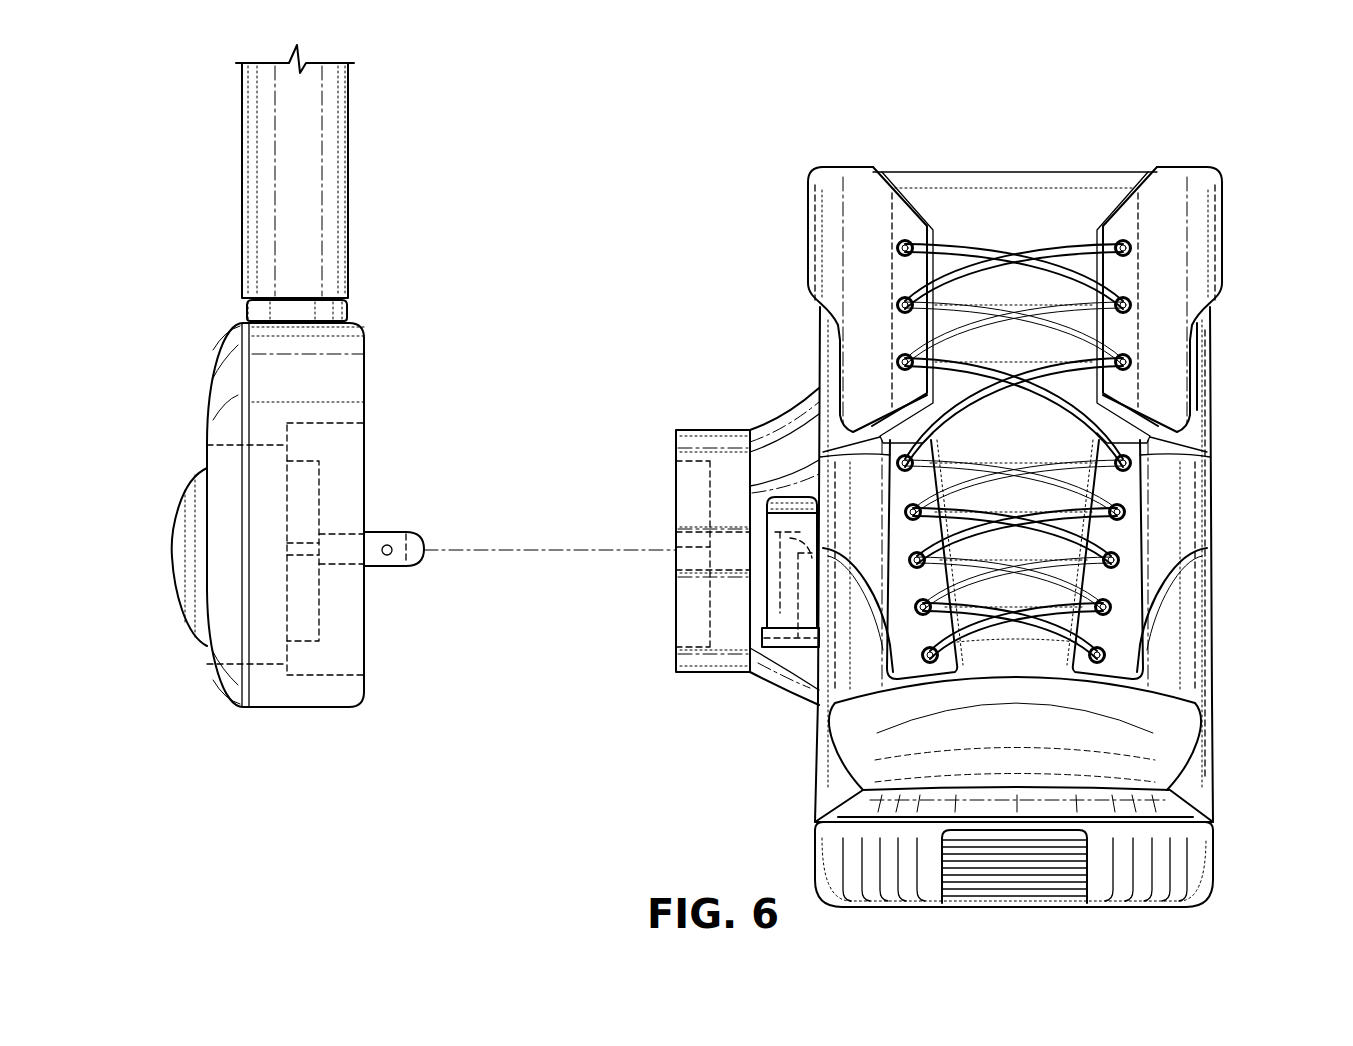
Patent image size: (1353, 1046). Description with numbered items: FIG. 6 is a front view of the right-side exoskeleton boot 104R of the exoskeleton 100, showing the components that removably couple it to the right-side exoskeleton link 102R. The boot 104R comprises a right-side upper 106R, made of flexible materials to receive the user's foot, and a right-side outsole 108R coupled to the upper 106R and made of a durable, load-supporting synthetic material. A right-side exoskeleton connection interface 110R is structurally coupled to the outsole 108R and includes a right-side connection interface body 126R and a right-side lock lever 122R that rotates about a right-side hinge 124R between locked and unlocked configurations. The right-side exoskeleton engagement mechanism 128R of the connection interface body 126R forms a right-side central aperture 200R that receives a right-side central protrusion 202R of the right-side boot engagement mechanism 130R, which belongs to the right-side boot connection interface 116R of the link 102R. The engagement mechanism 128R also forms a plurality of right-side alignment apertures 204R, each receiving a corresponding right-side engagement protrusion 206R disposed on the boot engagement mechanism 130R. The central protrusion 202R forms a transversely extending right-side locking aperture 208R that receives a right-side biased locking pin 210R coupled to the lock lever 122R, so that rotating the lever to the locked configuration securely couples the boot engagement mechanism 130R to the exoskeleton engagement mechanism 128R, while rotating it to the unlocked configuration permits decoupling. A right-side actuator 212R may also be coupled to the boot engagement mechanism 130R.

The exoskeleton 100 is at (143, 150).
The right-side exoskeleton link 102R is at (408, 192).
The right-side exoskeleton boot 104R is at (778, 193).
The right-side upper 106R is at (1192, 497).
The right-side outsole 108R is at (1020, 910).
The right-side exoskeleton connection interface 110R is at (746, 428).
The right-side boot connection interface 116R is at (343, 655).
The right-side lock lever 122R is at (769, 612).
The right-side hinge 124R is at (789, 690).
The right-side connection interface body 126R is at (791, 432).
The right-side exoskeleton engagement mechanism 128R is at (691, 438).
The right-side boot engagement mechanism 130R is at (365, 527).
The right-side central aperture 200R is at (698, 571).
The right-side central protrusion 202R is at (422, 544).
The right-side alignment apertures 204R is at (691, 487).
The right-side engagement protrusion 206R is at (302, 470).
The right-side locking aperture 208R is at (390, 556).
The right-side biased locking pin 210R is at (782, 594).
The right-side actuator 212R is at (268, 653).